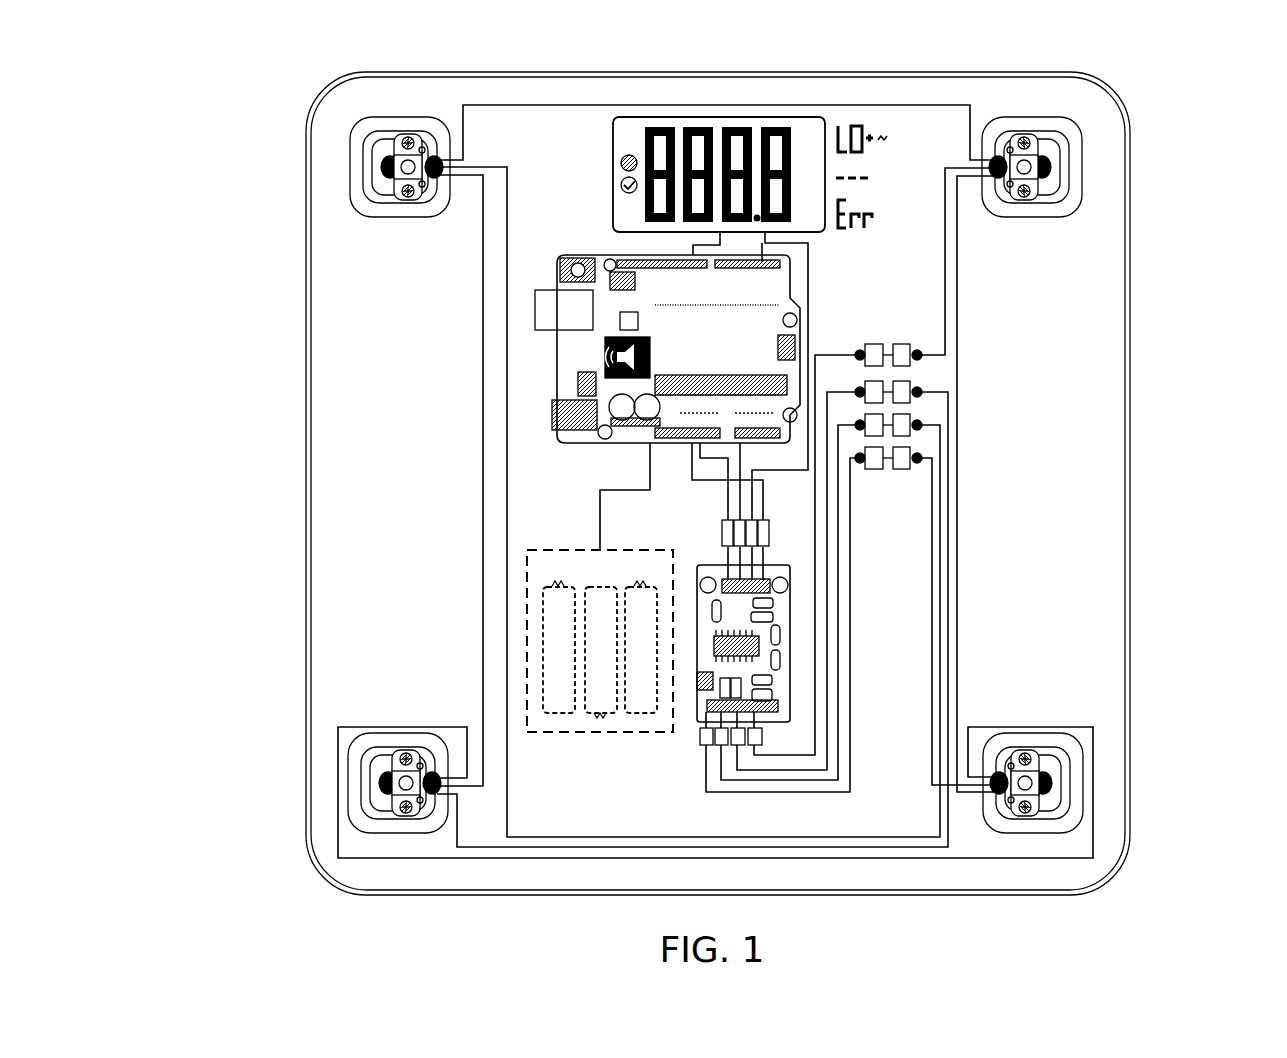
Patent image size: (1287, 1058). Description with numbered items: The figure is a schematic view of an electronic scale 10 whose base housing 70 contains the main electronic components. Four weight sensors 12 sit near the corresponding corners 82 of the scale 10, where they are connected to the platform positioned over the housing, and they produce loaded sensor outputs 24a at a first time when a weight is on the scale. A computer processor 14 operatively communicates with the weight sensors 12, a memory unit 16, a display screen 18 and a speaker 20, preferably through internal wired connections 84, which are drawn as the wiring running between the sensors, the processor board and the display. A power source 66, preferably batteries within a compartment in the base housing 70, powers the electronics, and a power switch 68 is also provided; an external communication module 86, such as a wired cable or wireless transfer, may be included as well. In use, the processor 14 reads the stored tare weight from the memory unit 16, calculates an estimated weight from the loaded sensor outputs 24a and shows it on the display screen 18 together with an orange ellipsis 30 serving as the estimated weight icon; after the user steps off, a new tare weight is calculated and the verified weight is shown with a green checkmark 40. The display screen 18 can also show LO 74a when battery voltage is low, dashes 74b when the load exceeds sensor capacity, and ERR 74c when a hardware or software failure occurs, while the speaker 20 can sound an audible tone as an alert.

The electronic scale 10 is at (280, 538).
The weight sensors 12 is at (347, 157).
The computer processor 14 is at (740, 648).
The memory unit 16 is at (712, 654).
The display screen 18 is at (621, 207).
The speaker 20 is at (504, 400).
The loaded sensor outputs 24a is at (700, 752).
The orange ellipsis 30 is at (615, 118).
The green checkmark 40 is at (622, 162).
The power source 66 is at (545, 592).
The power switch 68 is at (566, 272).
The base housing 70 is at (1128, 337).
The LO indication 74a is at (862, 128).
The dash indication 74b is at (870, 178).
The ERR indication 74c is at (877, 212).
The corners 82 is at (318, 92).
The internal wired connections 84 is at (852, 555).
The external communication module 86 is at (548, 310).